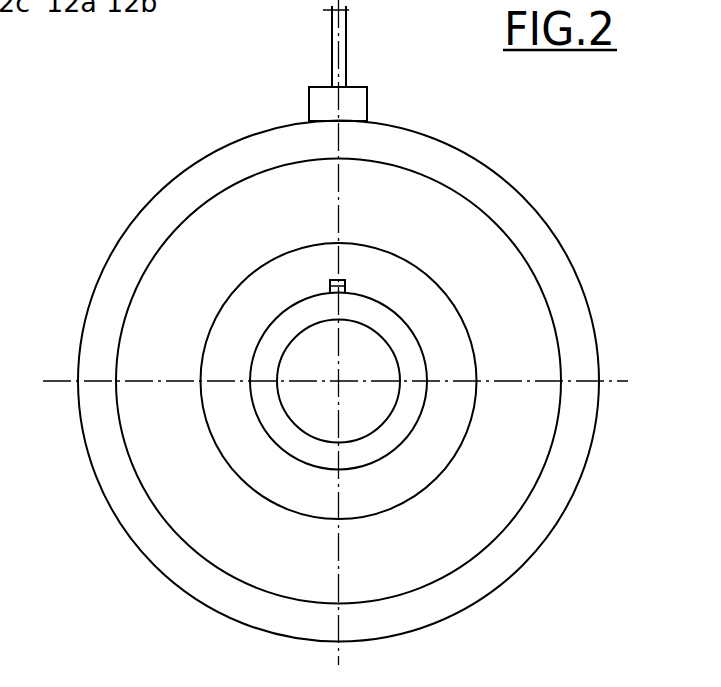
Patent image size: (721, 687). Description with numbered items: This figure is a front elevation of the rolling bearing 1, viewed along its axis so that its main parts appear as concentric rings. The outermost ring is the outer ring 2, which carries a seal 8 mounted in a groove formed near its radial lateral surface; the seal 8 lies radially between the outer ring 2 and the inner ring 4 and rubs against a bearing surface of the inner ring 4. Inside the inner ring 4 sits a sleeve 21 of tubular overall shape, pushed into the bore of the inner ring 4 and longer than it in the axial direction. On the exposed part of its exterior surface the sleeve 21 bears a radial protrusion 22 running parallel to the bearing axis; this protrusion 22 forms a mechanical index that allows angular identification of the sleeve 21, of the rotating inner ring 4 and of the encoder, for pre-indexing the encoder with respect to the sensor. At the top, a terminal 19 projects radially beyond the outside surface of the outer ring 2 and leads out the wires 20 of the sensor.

The rolling bearing 1 is at (305, 324).
The outer ring 2 is at (102, 427).
The inner ring 4 is at (228, 368).
The seal 8 is at (155, 388).
The terminal 19 is at (347, 100).
The wires 20 is at (343, 31).
The sleeve 21 is at (280, 340).
The radial protrusion 22 is at (329, 287).